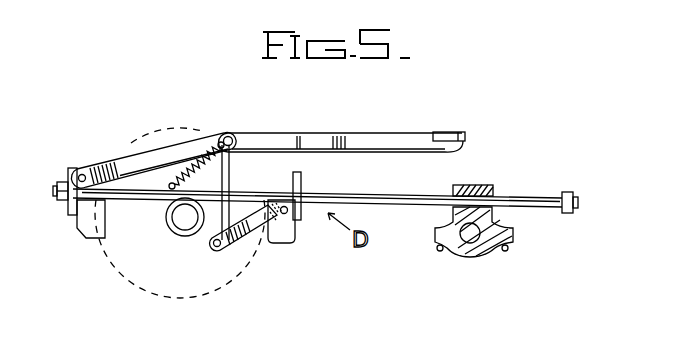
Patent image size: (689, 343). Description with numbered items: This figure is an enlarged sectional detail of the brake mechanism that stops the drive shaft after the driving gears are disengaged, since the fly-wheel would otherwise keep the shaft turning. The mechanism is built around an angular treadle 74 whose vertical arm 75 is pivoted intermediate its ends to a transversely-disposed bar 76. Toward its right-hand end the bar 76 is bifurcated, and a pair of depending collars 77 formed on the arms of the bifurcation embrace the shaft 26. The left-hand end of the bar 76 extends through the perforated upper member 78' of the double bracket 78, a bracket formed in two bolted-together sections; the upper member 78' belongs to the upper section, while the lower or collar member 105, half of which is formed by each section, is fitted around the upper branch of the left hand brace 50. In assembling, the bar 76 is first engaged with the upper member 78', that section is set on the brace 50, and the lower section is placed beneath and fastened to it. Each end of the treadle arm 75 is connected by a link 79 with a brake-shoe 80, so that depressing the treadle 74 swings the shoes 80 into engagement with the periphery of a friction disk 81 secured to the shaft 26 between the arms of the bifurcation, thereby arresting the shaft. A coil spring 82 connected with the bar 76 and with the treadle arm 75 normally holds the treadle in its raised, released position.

The shaft 26 is at (185, 220).
The left hand brace 50 is at (503, 233).
The angular treadle 74 is at (447, 131).
The vertical arm 75 is at (264, 173).
The transversely-disposed bar 76 is at (357, 195).
The depending collars 77 is at (172, 222).
The double bracket 78 is at (478, 222).
The perforated upper member 78' is at (474, 176).
The link 79 is at (141, 162).
The brake-shoe 80 is at (80, 225).
The friction disk 81 is at (192, 299).
The coil spring 82 is at (186, 176).
The collar member 105 is at (477, 247).